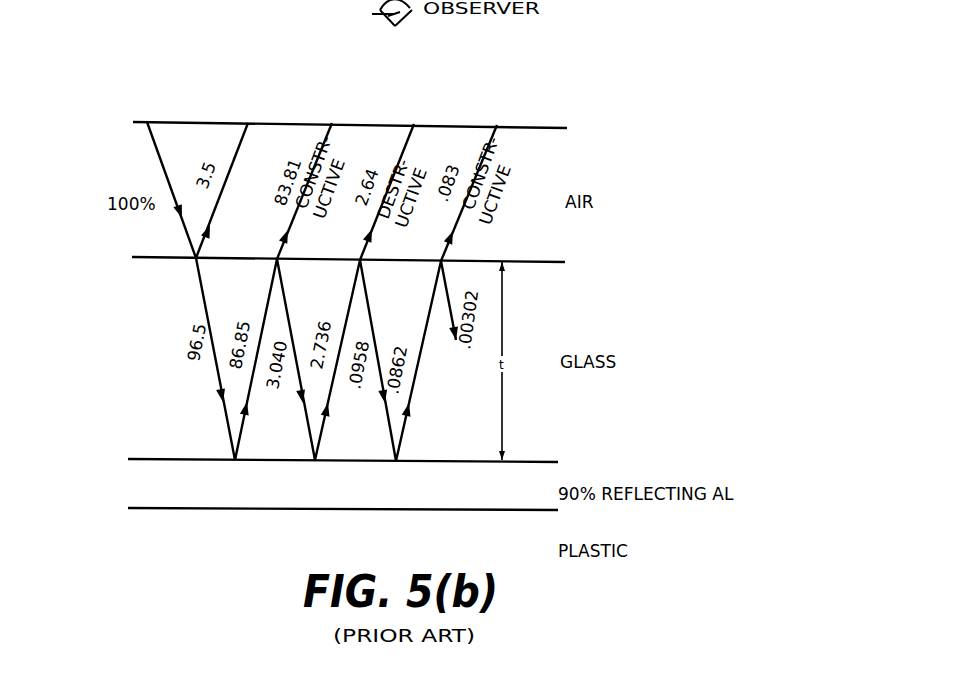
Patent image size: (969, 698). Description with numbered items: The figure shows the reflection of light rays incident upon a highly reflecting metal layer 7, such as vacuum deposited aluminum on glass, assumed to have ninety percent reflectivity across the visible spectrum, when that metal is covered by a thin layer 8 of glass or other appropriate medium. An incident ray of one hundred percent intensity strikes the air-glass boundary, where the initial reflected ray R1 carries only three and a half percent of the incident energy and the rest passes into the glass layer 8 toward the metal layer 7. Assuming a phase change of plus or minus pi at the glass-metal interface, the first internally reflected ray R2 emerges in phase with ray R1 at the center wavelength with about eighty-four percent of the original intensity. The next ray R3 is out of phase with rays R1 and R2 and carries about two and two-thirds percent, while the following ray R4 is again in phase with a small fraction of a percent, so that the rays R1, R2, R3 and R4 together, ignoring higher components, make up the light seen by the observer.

The reflecting metal layer 7 is at (150, 477).
The thin layer of glass 8 is at (153, 351).
The initial reflected ray R1 is at (222, 190).
The first internally reflected ray R2 is at (304, 191).
The second internally reflected ray R3 is at (387, 192).
The third internally reflected ray R4 is at (469, 193).